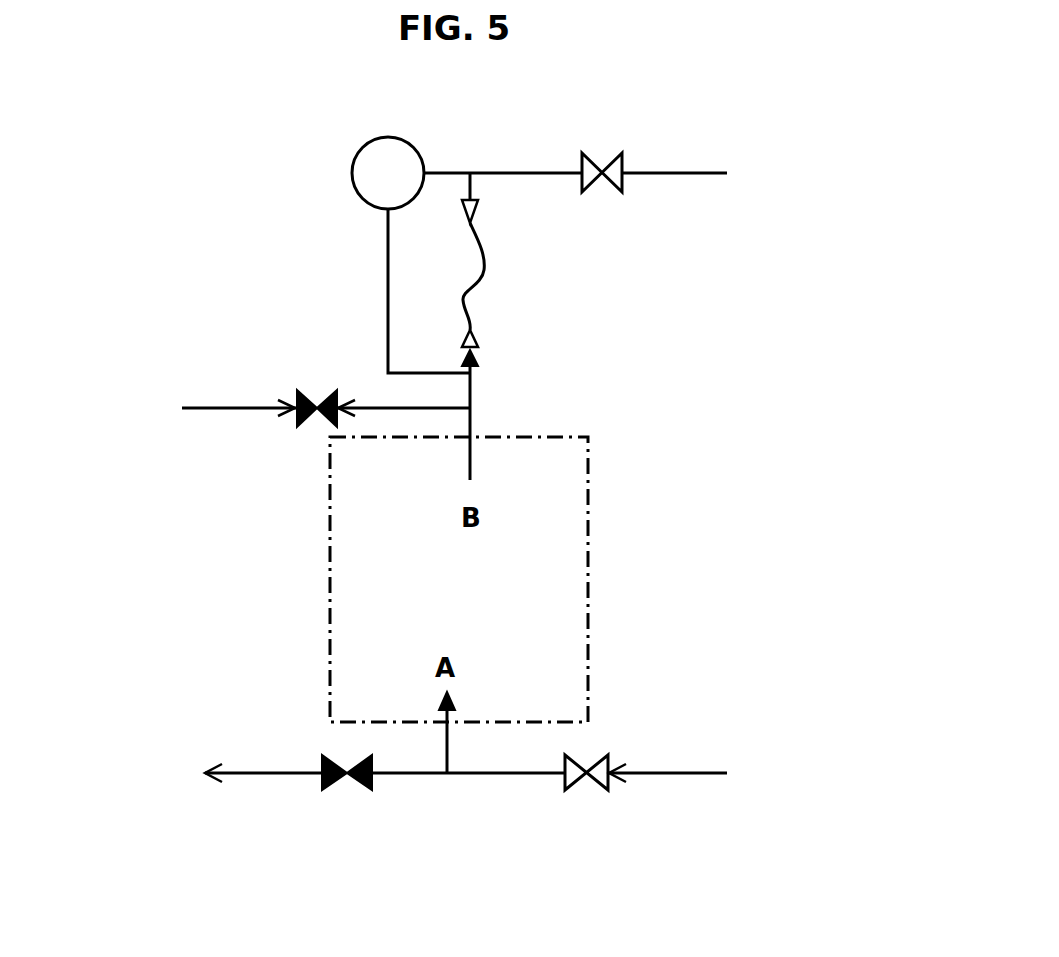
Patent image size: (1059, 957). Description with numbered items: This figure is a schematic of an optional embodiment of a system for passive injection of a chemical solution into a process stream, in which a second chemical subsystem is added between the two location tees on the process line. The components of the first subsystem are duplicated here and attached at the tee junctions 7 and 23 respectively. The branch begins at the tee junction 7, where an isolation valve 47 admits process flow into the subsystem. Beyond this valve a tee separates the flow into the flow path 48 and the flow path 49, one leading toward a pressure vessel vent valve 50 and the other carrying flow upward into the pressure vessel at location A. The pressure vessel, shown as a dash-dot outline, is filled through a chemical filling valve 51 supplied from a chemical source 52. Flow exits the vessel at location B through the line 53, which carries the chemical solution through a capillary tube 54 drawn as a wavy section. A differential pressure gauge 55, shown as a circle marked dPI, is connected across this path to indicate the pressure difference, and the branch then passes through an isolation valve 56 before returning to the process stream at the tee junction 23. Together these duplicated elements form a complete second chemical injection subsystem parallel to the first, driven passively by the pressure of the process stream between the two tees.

The tee junction 7 is at (722, 785).
The tee junction 23 is at (720, 165).
The isolation valve 47 is at (569, 795).
The flow path 48 is at (491, 790).
The flow path 49 is at (410, 790).
The pressure vessel vent valve 50 is at (365, 792).
The chemical filling valve 51 is at (290, 430).
The chemical source 52 is at (226, 398).
The line 53 is at (484, 413).
The capillary tube 54 is at (498, 283).
The differential pressure gauge 55 is at (343, 163).
The isolation valve 56 is at (585, 135).